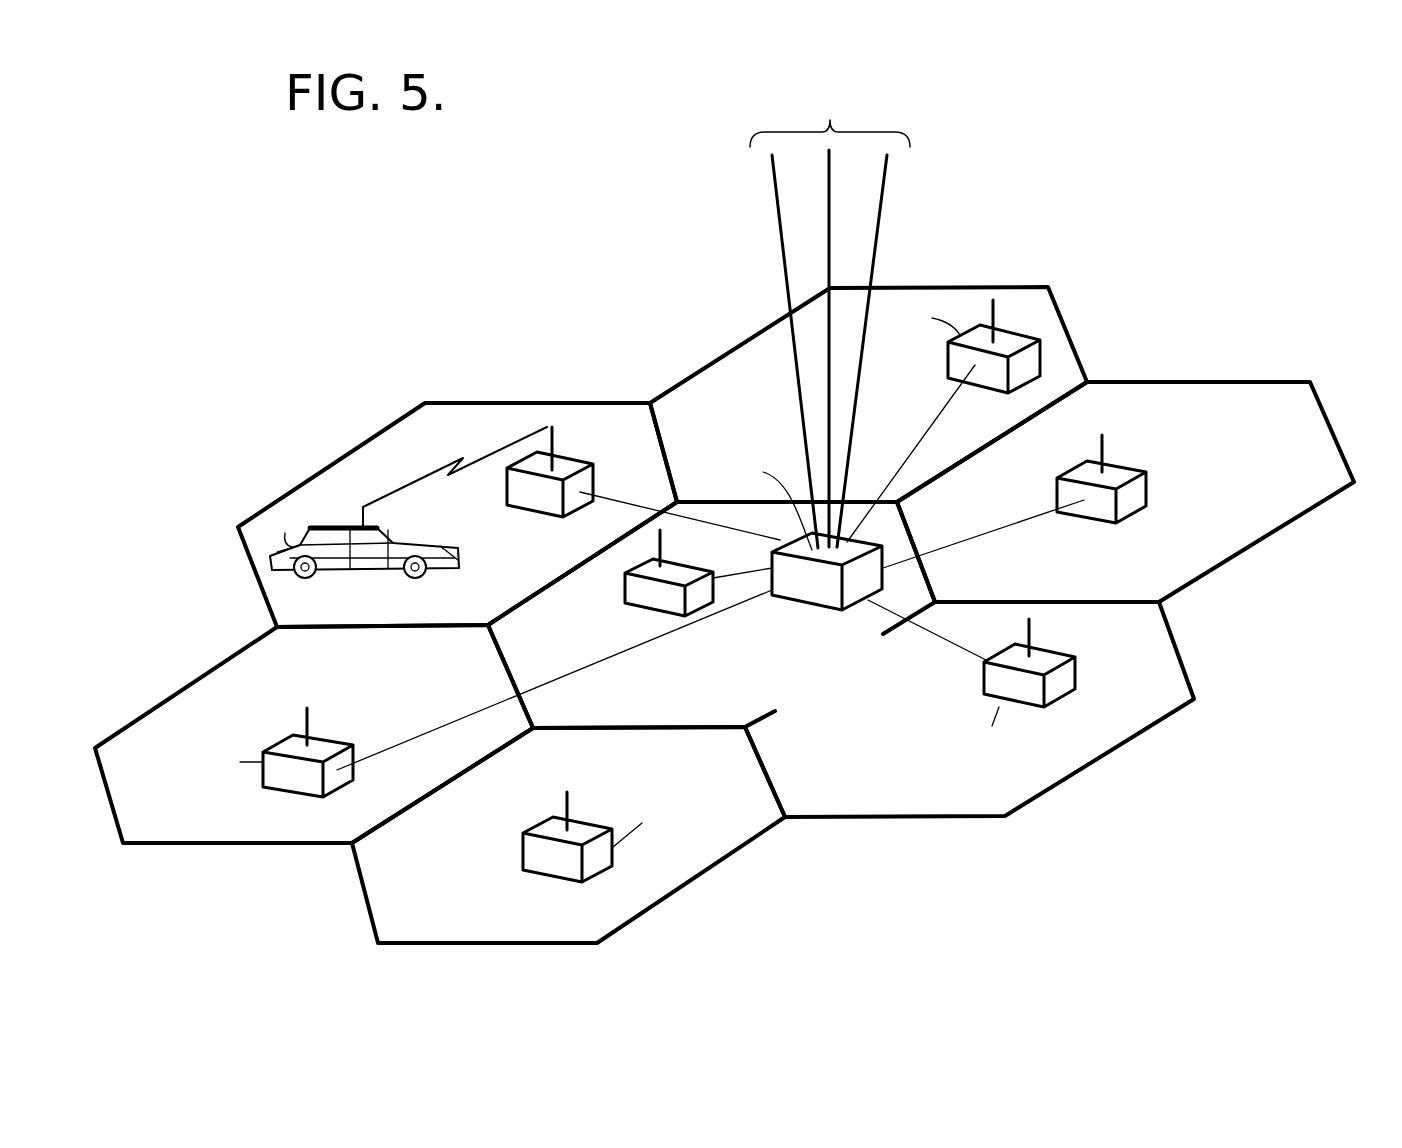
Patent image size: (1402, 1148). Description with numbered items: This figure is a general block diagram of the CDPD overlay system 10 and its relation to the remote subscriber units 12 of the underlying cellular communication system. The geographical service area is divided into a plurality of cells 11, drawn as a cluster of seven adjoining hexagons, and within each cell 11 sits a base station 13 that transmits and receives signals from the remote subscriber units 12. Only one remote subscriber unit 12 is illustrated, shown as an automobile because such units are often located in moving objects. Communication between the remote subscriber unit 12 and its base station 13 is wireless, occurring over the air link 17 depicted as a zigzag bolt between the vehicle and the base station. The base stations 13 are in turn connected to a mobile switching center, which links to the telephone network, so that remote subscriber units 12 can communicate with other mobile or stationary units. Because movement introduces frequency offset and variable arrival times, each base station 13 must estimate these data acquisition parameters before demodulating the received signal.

The CDPD overlay system 10 is at (1180, 175).
The cell 11 is at (460, 413).
The remote subscriber unit 12 is at (340, 527).
The base station 13 is at (563, 437).
The air link 17 is at (413, 478).